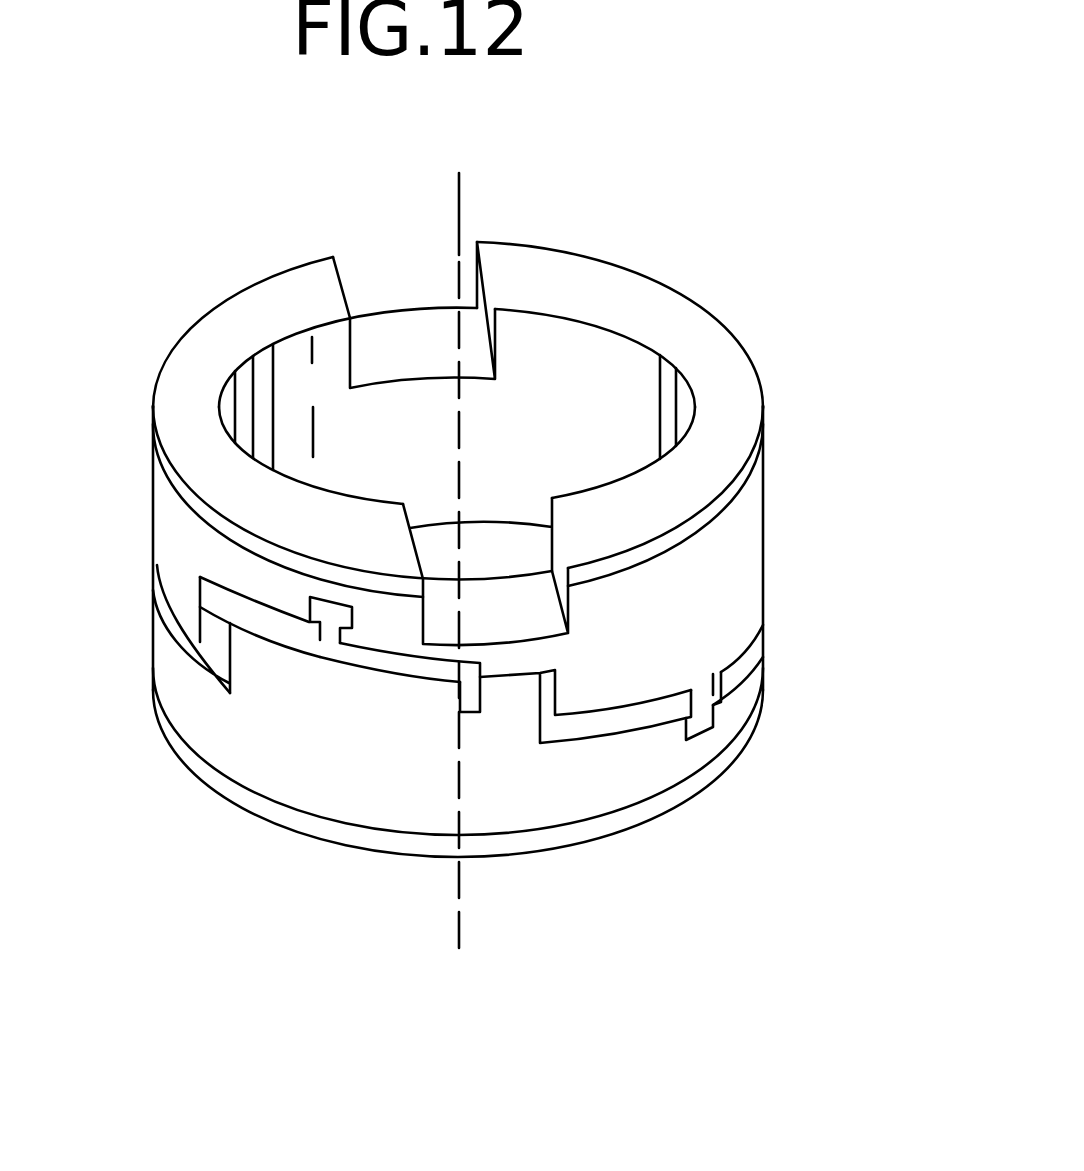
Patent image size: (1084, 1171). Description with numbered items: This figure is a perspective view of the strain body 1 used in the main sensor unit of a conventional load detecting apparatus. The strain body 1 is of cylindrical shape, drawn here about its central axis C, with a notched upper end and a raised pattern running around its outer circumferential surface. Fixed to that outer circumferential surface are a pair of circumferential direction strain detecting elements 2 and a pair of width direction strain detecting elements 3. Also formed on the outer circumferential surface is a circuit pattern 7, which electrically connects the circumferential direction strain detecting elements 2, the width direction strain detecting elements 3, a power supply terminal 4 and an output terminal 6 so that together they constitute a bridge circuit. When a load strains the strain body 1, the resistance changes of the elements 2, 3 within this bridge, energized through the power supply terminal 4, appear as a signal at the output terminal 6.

The strain body 1 is at (718, 560).
The circumferential direction strain detecting elements 2 is at (504, 692).
The width direction strain detecting elements 3 is at (212, 640).
The power supply terminal 4 is at (330, 616).
The output terminal 6 is at (700, 710).
The circuit pattern 7 is at (370, 660).
The central axis C is at (460, 207).